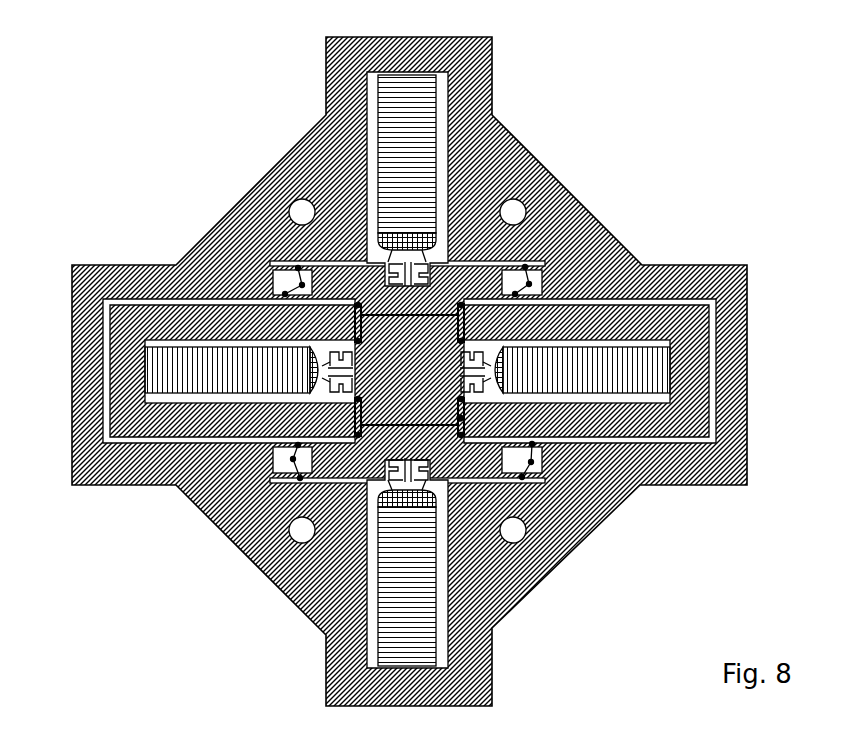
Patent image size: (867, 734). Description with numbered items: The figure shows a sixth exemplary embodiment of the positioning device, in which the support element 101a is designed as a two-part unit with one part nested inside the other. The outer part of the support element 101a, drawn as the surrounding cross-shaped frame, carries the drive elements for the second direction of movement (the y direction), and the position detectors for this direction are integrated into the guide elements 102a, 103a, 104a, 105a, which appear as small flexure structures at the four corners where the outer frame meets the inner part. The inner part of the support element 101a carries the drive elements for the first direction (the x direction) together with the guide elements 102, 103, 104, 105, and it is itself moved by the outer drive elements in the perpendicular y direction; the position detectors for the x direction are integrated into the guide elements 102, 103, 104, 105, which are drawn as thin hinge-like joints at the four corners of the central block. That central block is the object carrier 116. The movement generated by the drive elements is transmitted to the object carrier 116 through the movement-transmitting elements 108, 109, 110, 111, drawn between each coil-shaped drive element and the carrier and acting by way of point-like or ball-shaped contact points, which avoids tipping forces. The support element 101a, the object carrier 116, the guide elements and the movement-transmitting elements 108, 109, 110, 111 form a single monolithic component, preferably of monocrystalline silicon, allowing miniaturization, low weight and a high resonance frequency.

The support element 101a is at (340, 67).
The guide element 102 is at (461, 314).
The guide element 102a is at (529, 284).
The guide element 103 is at (459, 412).
The guide element 103a is at (531, 462).
The guide element 104 is at (356, 413).
The guide element 104a is at (293, 459).
The guide element 105 is at (357, 318).
The guide element 105a is at (302, 285).
The movement-transmitting element 108 is at (401, 258).
The movement-transmitting element 109 is at (487, 368).
The movement-transmitting element 110 is at (403, 487).
The movement-transmitting element 111 is at (325, 369).
The object carrier 116 is at (460, 418).